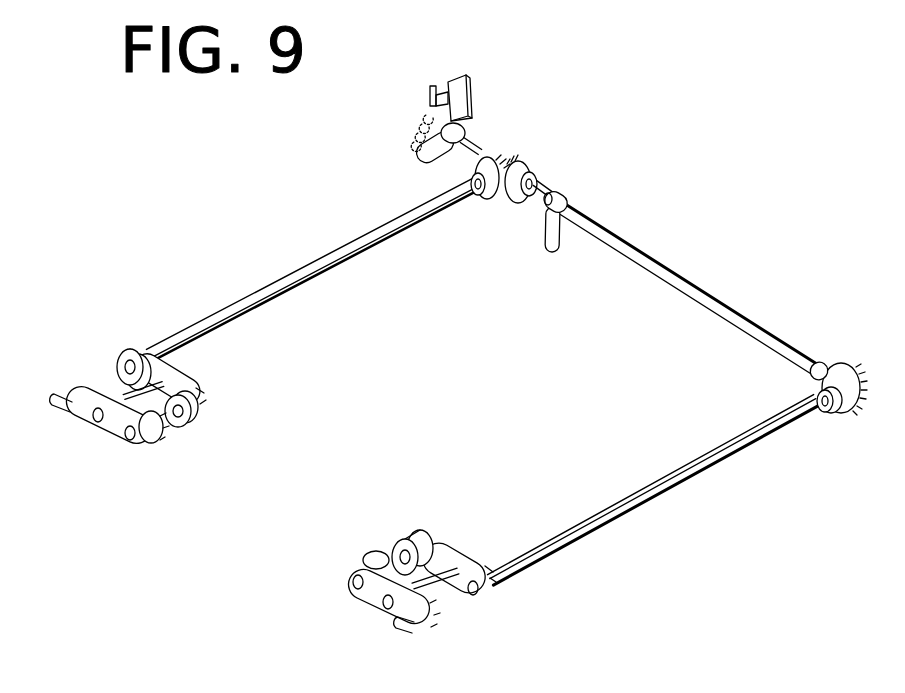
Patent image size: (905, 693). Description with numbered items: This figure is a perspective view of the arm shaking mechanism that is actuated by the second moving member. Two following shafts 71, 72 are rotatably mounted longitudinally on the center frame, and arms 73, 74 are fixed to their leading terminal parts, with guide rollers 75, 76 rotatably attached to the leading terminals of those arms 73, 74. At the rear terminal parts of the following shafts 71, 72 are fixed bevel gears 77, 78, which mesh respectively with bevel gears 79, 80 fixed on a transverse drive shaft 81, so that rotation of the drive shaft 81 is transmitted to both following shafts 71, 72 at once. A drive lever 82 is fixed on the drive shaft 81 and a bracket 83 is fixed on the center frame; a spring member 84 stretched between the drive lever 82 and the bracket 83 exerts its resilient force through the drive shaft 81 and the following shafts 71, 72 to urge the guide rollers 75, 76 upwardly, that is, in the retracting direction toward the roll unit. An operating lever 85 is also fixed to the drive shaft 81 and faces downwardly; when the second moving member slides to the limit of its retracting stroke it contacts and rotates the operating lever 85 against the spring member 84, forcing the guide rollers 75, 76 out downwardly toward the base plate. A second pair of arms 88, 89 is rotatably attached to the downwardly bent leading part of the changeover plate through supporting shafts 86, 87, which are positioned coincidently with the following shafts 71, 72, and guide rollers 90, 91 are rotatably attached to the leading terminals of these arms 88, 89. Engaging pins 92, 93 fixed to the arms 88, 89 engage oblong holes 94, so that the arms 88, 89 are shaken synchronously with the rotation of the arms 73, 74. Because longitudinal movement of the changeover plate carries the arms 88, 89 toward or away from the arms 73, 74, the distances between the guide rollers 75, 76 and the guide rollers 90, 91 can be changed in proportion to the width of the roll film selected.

The following shaft 71 is at (347, 253).
The following shaft 72 is at (658, 492).
The arm 73 is at (187, 372).
The arm 74 is at (463, 550).
The guide roller 75 is at (193, 433).
The guide roller 76 is at (405, 540).
The bevel gear 77 is at (492, 200).
The bevel gear 78 is at (843, 413).
The bevel gear 79 is at (537, 167).
The bevel gear 80 is at (843, 362).
The drive shaft 81 is at (620, 238).
The drive lever 82 is at (414, 170).
The bracket 83 is at (463, 93).
The spring member 84 is at (421, 118).
The operating lever 85 is at (553, 258).
The supporting shaft 86 is at (60, 413).
The supporting shaft 87 is at (397, 628).
The arm 88 is at (112, 437).
The arm 89 is at (370, 600).
The guide roller 90 is at (162, 443).
The guide roller 91 is at (366, 553).
The engaging pin 92 is at (120, 392).
The engaging pin 93 is at (438, 592).
The oblong hole 94 is at (150, 352).